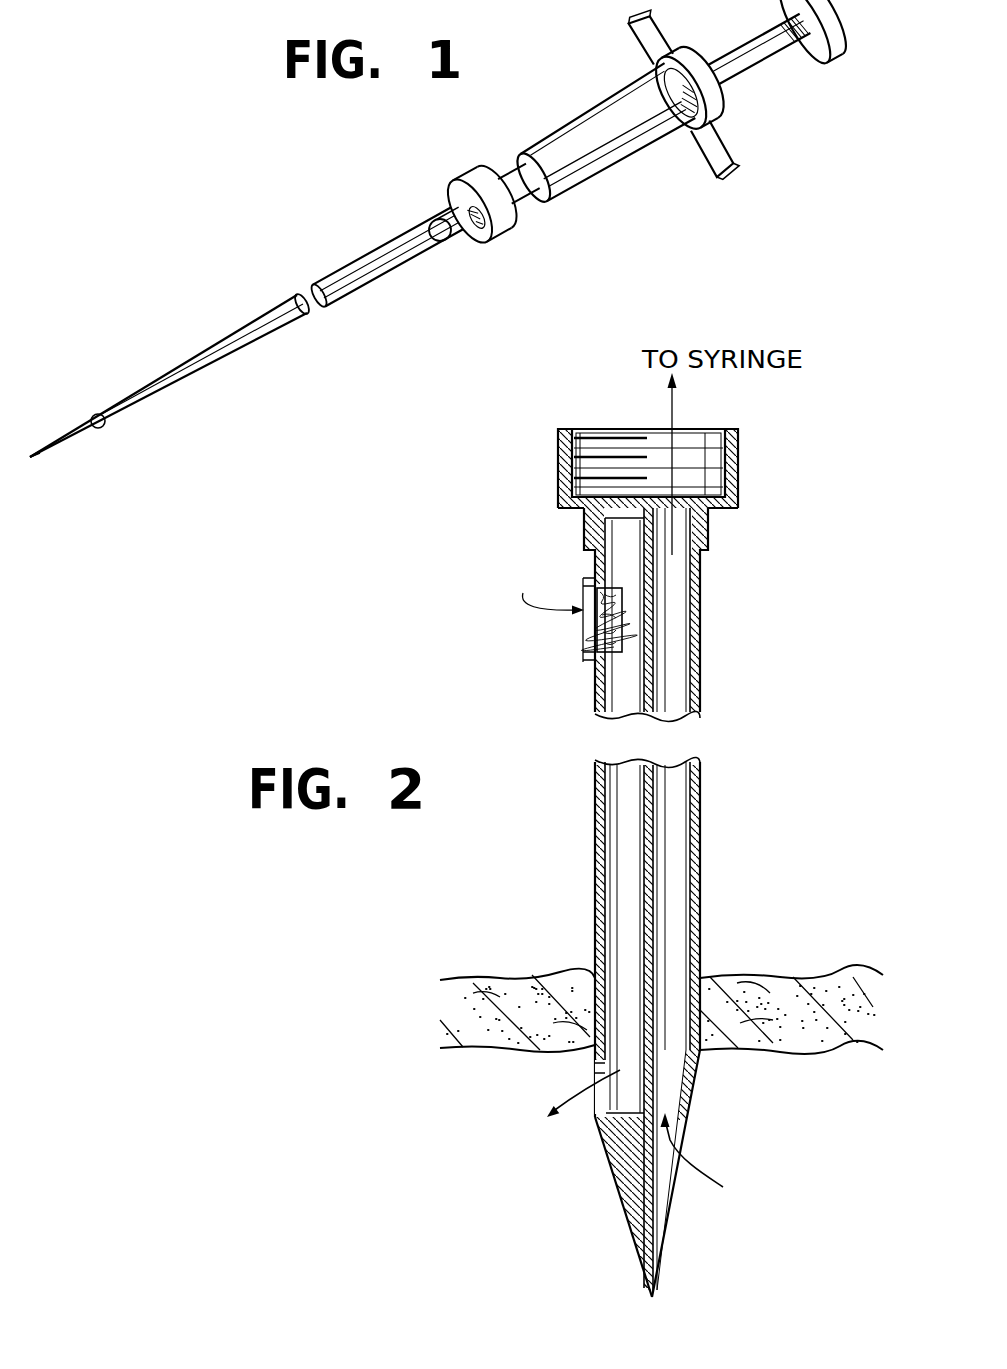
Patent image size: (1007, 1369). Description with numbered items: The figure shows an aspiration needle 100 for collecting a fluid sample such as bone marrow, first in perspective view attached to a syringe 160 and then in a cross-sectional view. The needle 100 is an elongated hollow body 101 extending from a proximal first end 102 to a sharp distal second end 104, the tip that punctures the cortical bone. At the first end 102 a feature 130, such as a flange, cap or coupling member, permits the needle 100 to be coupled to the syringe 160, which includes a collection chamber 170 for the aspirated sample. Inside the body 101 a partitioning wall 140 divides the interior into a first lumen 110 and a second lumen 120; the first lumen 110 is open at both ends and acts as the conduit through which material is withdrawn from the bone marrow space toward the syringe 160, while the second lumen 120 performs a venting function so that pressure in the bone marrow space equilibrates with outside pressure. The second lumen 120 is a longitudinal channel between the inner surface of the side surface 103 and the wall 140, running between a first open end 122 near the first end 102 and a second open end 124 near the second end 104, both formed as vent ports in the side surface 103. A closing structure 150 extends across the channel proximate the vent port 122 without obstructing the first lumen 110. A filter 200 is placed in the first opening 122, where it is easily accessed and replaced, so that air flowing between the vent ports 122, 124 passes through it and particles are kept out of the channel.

In FIG. 1, the needle 100 is at (258, 296).
In FIG. 2, the needle 100 is at (708, 612).
In FIG. 1, the body 101 is at (218, 357).
In FIG. 2, the body 101 is at (692, 868).
In FIG. 1, the first end 102 is at (547, 200).
In FIG. 2, the first end 102 is at (570, 422).
In FIG. 2, the side surface 103 is at (600, 780).
In FIG. 1, the second end 104 is at (30, 458).
In FIG. 2, the second end 104 is at (652, 1297).
In FIG. 2, the first lumen 110 is at (683, 815).
In FIG. 2, the second lumen 120 is at (610, 838).
In FIG. 2, the first open end 122 is at (600, 635).
In FIG. 1, the second open end 124 is at (99, 414).
In FIG. 2, the second open end 124 is at (613, 1062).
In FIG. 1, the feature 130 is at (455, 187).
In FIG. 2, the feature 130 is at (740, 451).
In FIG. 2, the partitioning wall 140 is at (647, 892).
In FIG. 2, the structure 150 is at (613, 513).
In FIG. 1, the syringe 160 is at (720, 107).
In FIG. 1, the collection chamber 170 is at (610, 147).
In FIG. 1, the filter 200 is at (440, 241).
In FIG. 2, the filter 200 is at (593, 627).